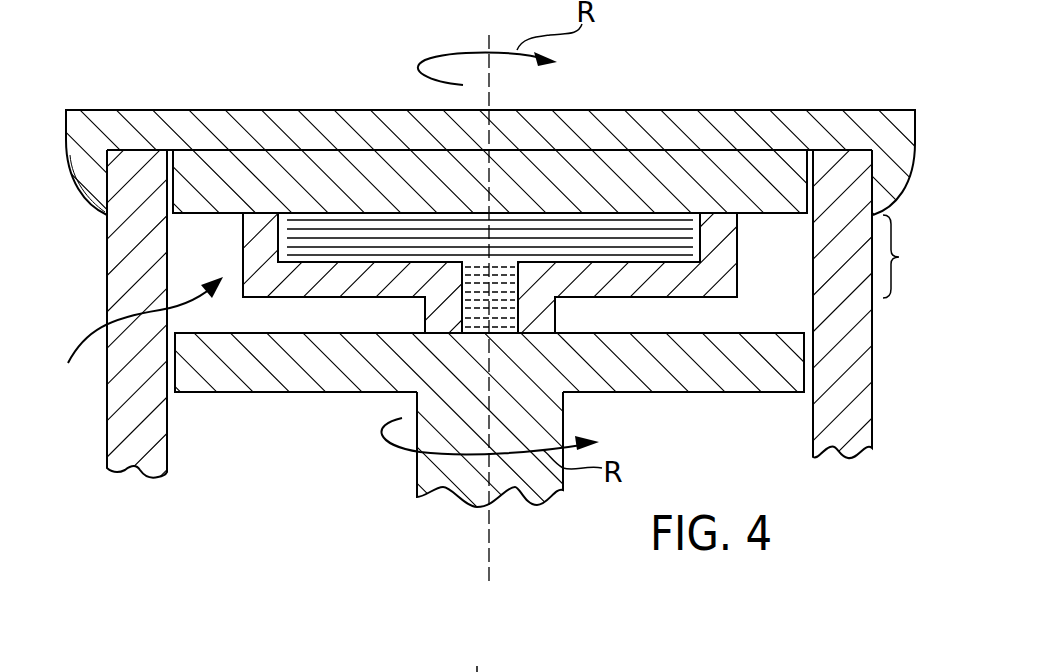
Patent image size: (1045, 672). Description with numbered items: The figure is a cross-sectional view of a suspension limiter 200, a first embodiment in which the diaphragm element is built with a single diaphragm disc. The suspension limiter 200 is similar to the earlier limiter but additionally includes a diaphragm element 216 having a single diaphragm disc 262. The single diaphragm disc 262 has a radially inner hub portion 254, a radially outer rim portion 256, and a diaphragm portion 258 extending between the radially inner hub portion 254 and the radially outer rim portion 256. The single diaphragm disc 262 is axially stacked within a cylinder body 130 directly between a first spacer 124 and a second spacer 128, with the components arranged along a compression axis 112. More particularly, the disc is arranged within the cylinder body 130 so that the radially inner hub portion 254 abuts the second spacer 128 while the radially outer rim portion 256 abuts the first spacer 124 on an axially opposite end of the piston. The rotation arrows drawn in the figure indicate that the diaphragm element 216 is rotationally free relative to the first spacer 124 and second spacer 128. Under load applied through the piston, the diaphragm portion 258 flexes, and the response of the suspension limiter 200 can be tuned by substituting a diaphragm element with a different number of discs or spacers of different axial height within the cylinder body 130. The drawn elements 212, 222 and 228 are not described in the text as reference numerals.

The compression axis 112 is at (489, 572).
The first spacer 124 is at (657, 165).
The second spacer 128 is at (662, 378).
The cylinder body 130 is at (127, 417).
The suspension limiter 200 is at (133, 539).
The outer wall 212 is at (827, 412).
The diaphragm element 216 is at (915, 256).
The hub 222 is at (430, 477).
The support plate 228 is at (215, 370).
The radially inner hub portion 254 is at (442, 302).
The radially outer rim portion 256 is at (715, 238).
The diaphragm portion 258 is at (632, 282).
The single diaphragm disc 262 is at (135, 337).